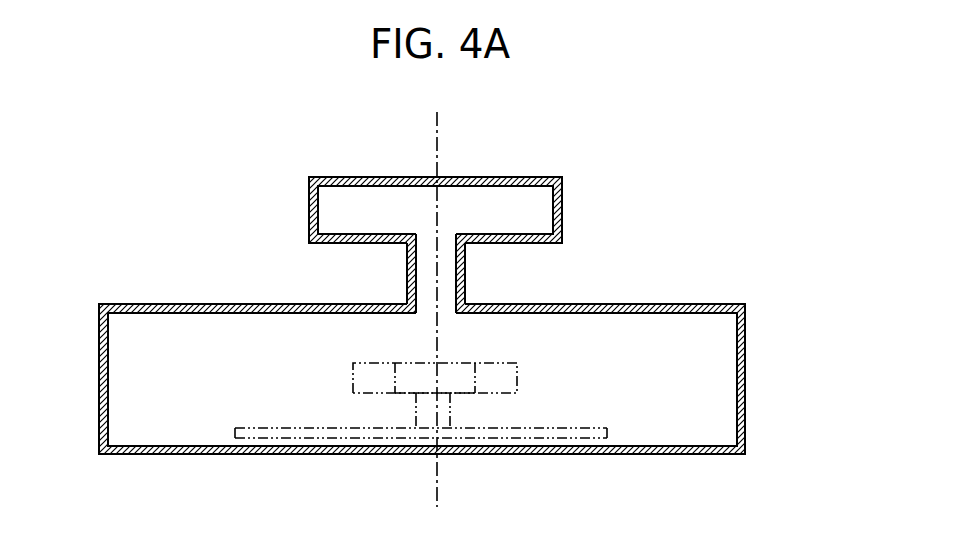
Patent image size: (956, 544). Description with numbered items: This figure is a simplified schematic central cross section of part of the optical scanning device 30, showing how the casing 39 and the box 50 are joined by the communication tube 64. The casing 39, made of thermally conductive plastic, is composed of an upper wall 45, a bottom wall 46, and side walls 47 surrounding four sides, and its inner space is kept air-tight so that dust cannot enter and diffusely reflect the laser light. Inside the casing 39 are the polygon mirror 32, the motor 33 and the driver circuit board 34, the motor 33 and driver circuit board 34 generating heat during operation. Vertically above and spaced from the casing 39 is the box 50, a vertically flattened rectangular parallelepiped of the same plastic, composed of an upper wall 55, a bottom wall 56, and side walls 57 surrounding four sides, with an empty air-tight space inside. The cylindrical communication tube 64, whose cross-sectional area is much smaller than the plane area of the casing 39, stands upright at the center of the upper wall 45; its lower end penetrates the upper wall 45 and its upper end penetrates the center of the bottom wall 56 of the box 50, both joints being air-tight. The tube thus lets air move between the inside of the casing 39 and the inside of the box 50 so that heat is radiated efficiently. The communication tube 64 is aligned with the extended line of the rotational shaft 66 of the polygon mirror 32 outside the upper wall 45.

The optical scanning device 30 is at (157, 172).
The polygon mirror 32 is at (517, 364).
The motor 33 is at (393, 401).
The driver circuit board 34 is at (588, 428).
The casing 39 is at (745, 304).
The upper wall 45 is at (672, 304).
The bottom wall 46 is at (633, 454).
The side walls 47 is at (746, 368).
The box 50 is at (560, 177).
The upper wall 55 is at (352, 177).
The bottom wall 56 is at (345, 243).
The side walls 57 is at (312, 210).
The communication tube 64 is at (467, 277).
The rotational shaft 66 is at (438, 144).